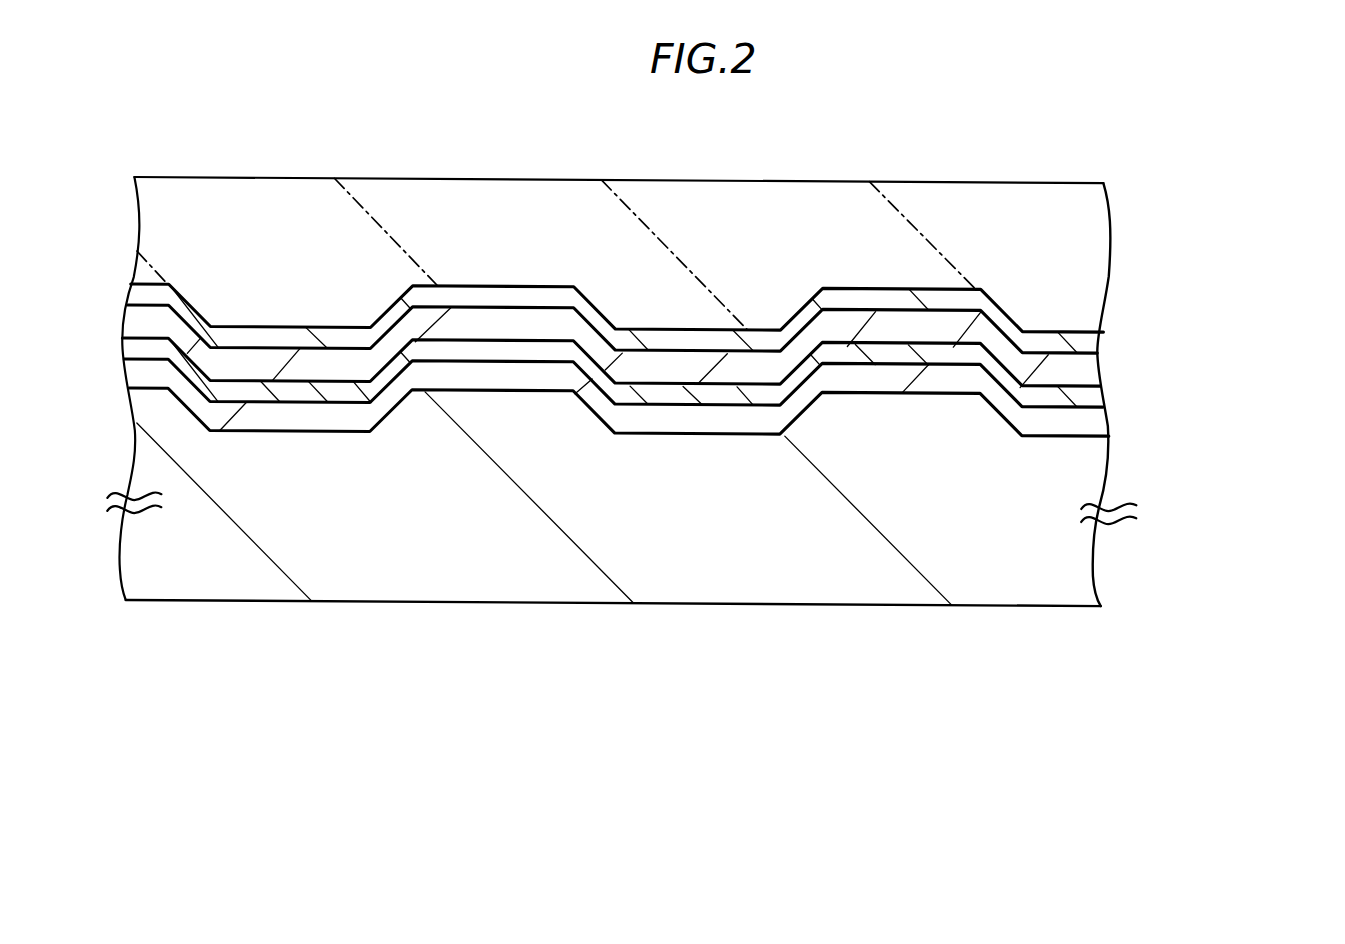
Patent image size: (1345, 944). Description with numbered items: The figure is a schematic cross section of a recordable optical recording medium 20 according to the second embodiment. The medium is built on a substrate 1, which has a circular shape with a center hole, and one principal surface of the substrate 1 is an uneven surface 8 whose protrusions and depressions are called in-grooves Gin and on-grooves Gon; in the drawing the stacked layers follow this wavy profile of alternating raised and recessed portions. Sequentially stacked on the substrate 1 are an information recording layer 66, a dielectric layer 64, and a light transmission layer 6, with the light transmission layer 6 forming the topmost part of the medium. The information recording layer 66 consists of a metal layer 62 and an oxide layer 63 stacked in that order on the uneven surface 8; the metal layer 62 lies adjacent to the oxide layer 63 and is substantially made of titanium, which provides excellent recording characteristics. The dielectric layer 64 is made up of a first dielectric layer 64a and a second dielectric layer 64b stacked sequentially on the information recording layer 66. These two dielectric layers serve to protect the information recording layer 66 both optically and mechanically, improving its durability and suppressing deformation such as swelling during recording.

The recordable optical recording medium 20 is at (911, 137).
The light transmission layer 6 is at (1090, 268).
The dielectric layer 64 is at (724, 337).
The second dielectric layer 64b is at (1090, 338).
The first dielectric layer 64a is at (1090, 367).
The information recording layer 66 is at (715, 397).
The oxide layer 63 is at (1090, 395).
The metal layer 62 is at (1090, 422).
The substrate 1 is at (1082, 562).
The uneven surface 8 is at (459, 569).
The in-groove Gin is at (358, 426).
The on-groove Gon is at (561, 387).